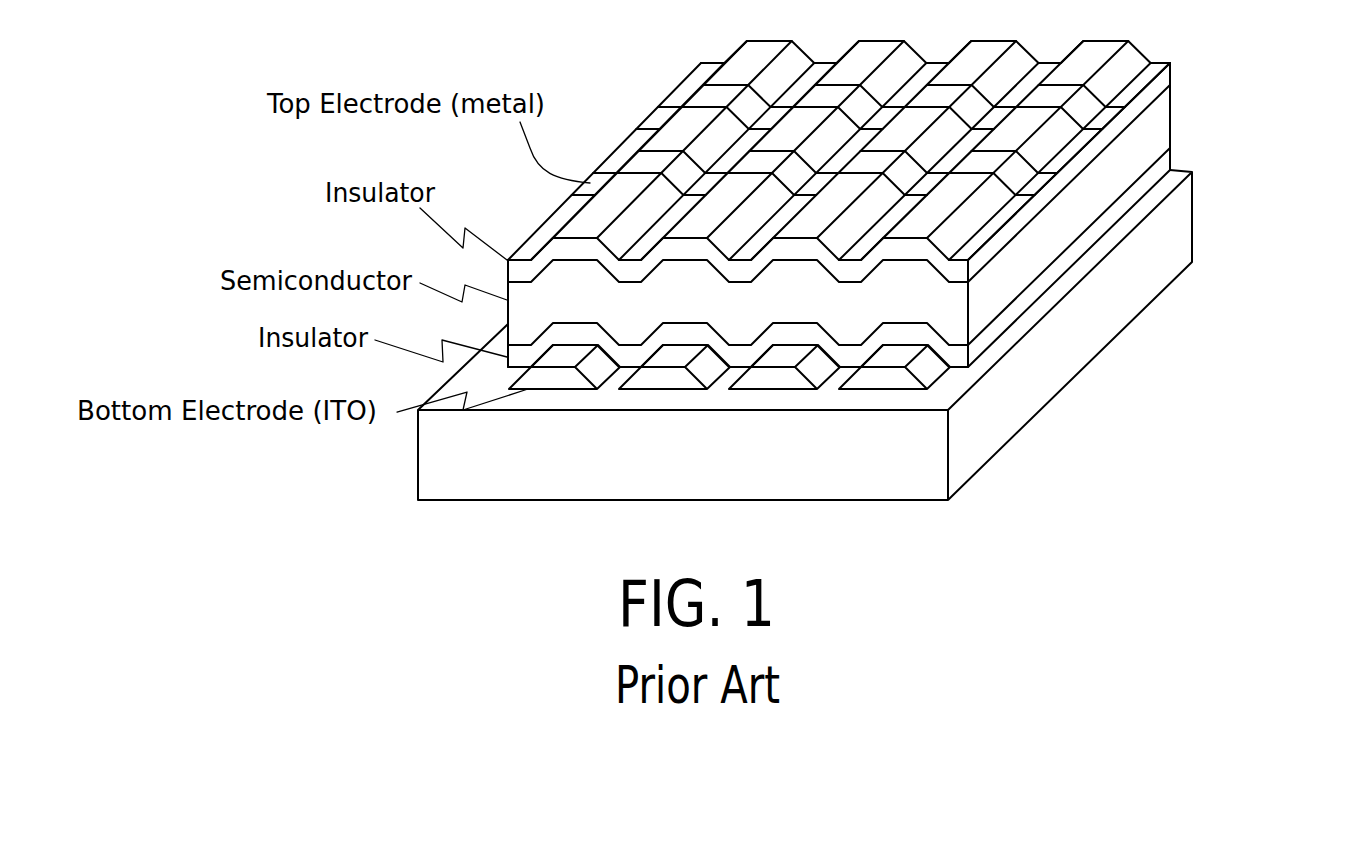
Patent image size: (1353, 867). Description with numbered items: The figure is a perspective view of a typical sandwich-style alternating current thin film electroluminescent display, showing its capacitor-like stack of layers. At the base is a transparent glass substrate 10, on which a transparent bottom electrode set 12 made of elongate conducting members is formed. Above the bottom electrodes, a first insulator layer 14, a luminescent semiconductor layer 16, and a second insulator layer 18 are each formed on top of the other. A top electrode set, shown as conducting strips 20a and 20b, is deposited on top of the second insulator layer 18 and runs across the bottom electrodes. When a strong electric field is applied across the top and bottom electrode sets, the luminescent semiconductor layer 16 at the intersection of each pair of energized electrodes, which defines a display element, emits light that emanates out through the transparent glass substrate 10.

The transparent glass substrate 10 is at (975, 455).
The transparent bottom electrode set 12 is at (937, 380).
The first insulator layer 14 is at (1025, 311).
The luminescent semiconductor layer 16 is at (1172, 113).
The second insulator layer 18 is at (1172, 68).
The conducting strip 20a is at (1047, 183).
The conducting strip 20b is at (1113, 115).